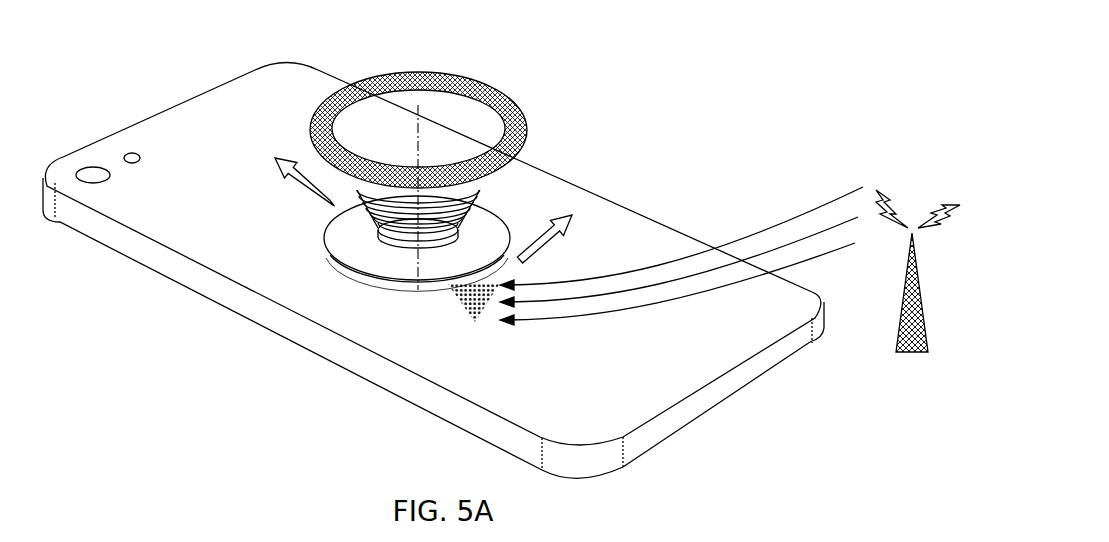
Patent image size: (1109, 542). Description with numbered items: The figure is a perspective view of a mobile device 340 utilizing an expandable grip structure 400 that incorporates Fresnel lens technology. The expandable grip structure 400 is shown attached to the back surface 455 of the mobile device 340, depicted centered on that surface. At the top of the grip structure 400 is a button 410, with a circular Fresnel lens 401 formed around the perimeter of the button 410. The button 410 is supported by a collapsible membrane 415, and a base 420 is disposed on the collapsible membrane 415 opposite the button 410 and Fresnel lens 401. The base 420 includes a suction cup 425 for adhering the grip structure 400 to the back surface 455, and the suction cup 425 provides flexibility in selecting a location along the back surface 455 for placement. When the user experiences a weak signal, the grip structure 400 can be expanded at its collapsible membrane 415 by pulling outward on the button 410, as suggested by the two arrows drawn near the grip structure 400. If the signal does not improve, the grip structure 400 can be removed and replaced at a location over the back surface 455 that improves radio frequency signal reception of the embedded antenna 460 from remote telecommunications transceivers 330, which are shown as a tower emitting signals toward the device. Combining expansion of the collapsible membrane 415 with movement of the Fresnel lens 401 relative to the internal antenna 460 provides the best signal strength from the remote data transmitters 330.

The remote telecommunications transceivers 330 is at (910, 362).
The mobile device 340 is at (433, 271).
The expandable grip structure 400 is at (387, 202).
The Fresnel lens 401 is at (433, 100).
The button 410 is at (418, 148).
The collapsible membrane 415 is at (485, 187).
The base 420 is at (495, 230).
The suction cup 425 is at (362, 266).
The back surface 455 is at (478, 383).
The embedded antenna 460 is at (458, 312).